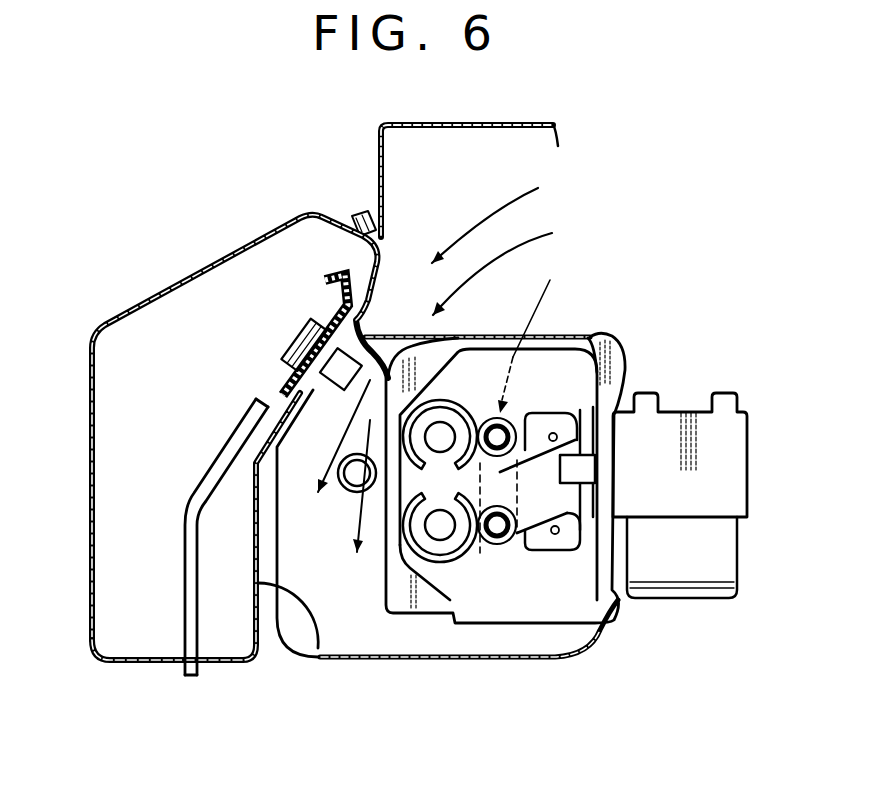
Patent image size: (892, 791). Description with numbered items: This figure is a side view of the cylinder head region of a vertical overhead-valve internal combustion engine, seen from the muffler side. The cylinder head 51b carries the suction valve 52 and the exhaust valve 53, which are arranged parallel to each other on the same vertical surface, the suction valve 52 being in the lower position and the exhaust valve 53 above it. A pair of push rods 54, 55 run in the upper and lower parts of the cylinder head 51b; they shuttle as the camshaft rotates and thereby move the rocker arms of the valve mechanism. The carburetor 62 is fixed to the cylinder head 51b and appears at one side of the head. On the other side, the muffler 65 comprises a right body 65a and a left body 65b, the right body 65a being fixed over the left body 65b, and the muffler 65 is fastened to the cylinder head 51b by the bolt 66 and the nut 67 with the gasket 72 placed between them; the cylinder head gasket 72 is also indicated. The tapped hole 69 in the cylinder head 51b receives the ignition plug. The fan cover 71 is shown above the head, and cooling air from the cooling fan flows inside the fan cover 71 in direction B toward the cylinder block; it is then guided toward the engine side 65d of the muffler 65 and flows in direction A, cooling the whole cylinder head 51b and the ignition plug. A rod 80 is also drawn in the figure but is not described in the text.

The cylinder head 51b is at (545, 655).
The suction valve 52 is at (440, 537).
The exhaust valve 53 is at (442, 437).
The push rod 54 is at (560, 543).
The push rod 55 is at (553, 433).
The carburetor 62 is at (698, 565).
The muffler 65 is at (115, 630).
The right body 65a is at (245, 645).
The left body 65b is at (140, 642).
The engine side 65d is at (317, 643).
The bolt 66 is at (304, 330).
The nut 67 is at (290, 360).
The tapped hole 69 is at (366, 477).
The fan cover 71 is at (540, 122).
The cylinder head gasket 72 is at (358, 318).
The rod 80 is at (189, 676).
The direction A is at (356, 516).
The direction B is at (523, 250).